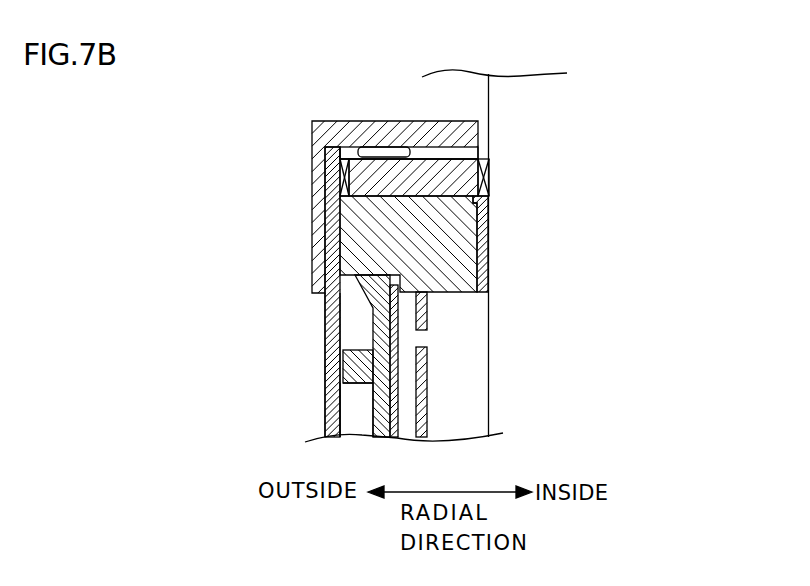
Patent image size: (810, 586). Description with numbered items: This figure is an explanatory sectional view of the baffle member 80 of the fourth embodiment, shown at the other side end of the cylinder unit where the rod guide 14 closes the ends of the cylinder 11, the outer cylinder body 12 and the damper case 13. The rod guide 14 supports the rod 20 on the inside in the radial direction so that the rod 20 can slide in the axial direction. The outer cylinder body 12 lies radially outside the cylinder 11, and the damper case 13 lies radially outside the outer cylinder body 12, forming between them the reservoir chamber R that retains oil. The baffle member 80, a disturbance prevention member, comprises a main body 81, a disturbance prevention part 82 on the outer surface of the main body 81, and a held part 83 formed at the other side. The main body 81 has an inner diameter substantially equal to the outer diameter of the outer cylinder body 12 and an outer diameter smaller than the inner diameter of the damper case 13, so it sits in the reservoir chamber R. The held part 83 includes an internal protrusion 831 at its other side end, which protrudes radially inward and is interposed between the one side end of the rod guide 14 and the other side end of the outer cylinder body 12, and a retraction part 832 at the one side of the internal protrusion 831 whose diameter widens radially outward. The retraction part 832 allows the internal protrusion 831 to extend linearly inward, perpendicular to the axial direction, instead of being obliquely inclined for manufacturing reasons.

The rod 20 is at (488, 103).
The rod guide 14 is at (337, 222).
The damper case 13 is at (327, 364).
The cylinder 11 is at (418, 303).
The outer cylinder body 12 is at (385, 408).
The main body 81 is at (373, 340).
The disturbance prevention part 82 is at (333, 379).
The held part 83 is at (308, 316).
The internal protrusion 831 is at (372, 252).
The retraction part 832 is at (388, 300).
The baffle member 80 is at (348, 438).
The reservoir chamber R is at (357, 408).